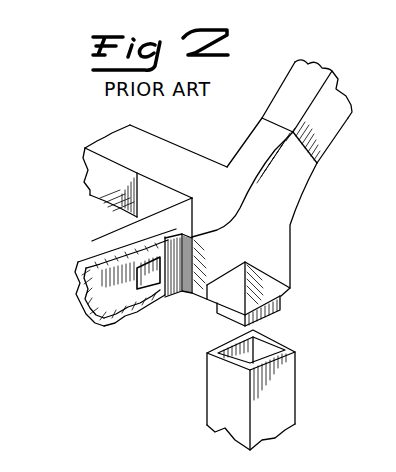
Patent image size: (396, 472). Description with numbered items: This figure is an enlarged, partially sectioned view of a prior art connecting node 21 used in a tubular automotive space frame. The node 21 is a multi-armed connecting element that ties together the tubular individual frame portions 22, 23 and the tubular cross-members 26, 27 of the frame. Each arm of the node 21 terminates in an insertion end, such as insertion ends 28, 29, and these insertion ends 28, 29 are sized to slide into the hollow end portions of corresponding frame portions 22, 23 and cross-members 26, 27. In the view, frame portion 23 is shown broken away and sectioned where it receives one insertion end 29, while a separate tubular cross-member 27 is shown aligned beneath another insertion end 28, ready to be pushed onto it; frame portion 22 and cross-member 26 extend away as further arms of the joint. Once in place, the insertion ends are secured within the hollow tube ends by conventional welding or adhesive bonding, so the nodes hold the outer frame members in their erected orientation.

The node 21 is at (272, 217).
The individual frame portion 22 is at (332, 120).
The individual frame portion 23 is at (115, 247).
The cross-member 26 is at (140, 145).
The cross-member 27 is at (280, 413).
The insertion end 28 is at (282, 295).
The insertion end 29 is at (178, 282).